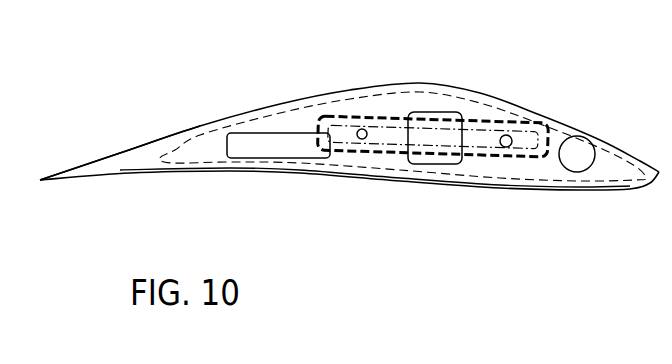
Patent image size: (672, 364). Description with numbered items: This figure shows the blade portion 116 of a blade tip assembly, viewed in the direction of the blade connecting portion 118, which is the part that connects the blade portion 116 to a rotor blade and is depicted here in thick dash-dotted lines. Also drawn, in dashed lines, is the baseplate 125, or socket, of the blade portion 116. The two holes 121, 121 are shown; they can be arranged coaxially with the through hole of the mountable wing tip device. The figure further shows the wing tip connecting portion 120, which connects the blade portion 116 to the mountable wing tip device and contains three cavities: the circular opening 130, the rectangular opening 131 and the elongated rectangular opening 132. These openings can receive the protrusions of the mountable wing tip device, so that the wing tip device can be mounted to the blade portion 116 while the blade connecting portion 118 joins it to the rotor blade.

The blade portion 116 is at (587, 197).
The blade connecting portion 118 is at (501, 122).
The wing tip connecting portion 120 is at (129, 155).
The holes 121 is at (360, 139).
The baseplate 125 is at (181, 163).
The circular opening 130 is at (578, 148).
The rectangular opening 131 is at (425, 112).
The elongated rectangular opening 132 is at (277, 140).